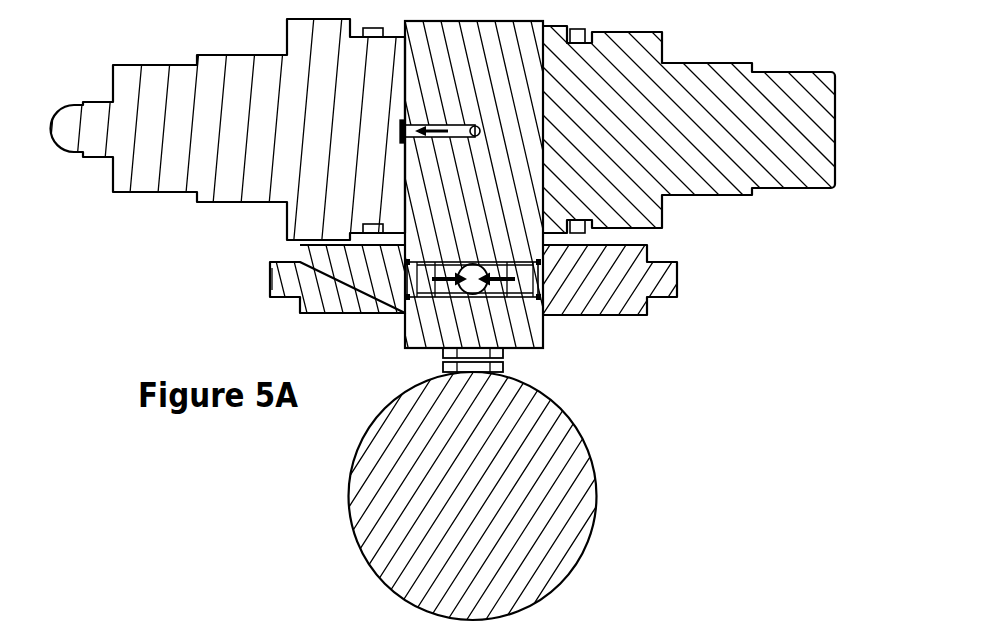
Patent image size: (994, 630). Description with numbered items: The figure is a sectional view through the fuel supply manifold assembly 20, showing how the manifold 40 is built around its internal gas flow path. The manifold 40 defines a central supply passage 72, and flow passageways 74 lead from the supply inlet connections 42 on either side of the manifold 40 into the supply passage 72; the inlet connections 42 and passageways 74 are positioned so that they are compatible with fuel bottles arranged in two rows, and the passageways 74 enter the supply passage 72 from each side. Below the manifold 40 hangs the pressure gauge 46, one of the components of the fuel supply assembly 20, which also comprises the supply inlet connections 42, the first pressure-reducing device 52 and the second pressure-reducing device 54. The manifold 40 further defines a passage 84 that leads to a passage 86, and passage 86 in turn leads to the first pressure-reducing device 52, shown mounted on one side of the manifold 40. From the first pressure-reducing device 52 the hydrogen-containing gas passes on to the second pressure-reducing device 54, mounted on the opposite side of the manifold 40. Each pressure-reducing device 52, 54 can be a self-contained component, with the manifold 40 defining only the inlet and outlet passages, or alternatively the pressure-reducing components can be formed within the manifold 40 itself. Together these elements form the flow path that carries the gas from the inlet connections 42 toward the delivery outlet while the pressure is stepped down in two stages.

The fuel supply manifold assembly 20 is at (637, 24).
The manifold 40 is at (488, 45).
The supply inlet connections 42 is at (318, 299).
The pressure gauge 46 is at (548, 464).
The first pressure-reducing device 52 is at (258, 173).
The second pressure-reducing device 54 is at (713, 181).
The supply passage 72 is at (471, 262).
The flow passageways 74 is at (440, 268).
The passage 84 is at (475, 137).
The passage 86 is at (458, 126).